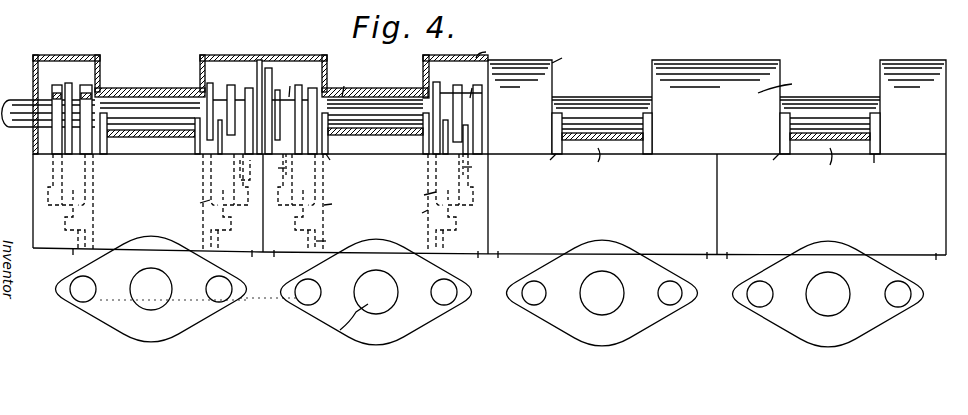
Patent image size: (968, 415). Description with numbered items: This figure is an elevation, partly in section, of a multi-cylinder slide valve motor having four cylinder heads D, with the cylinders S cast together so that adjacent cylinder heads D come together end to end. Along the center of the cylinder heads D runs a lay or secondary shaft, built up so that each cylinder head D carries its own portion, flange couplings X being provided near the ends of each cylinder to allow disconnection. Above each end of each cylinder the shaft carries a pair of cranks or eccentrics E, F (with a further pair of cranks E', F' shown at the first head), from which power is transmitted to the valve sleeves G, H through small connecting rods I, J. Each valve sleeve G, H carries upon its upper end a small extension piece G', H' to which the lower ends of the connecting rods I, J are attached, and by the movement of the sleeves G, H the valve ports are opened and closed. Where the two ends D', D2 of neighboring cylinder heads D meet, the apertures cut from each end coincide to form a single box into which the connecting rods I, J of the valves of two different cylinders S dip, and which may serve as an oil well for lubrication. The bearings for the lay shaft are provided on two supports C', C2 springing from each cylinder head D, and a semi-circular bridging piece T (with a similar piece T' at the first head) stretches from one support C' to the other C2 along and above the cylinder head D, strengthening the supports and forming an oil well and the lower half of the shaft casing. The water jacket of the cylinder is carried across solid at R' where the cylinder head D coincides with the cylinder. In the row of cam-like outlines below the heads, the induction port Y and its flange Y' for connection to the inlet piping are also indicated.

The solid portion of water jacket R' is at (489, 88).
The flange coupling X is at (263, 58).
The valve rod E' is at (58, 111).
The valve rod F' is at (83, 111).
The passage T' is at (261, 100).
The crank E is at (348, 96).
The crank F is at (312, 112).
The semi-circular bridging piece T is at (604, 140).
The valve connecting rod I is at (52, 160).
The bearing support C' is at (445, 146).
The bearing support C2 is at (532, 146).
The cylinder head D is at (489, 204).
The end of cylinder head D2 is at (390, 260).
The end of cylinder head D' is at (589, 261).
The extension piece G' is at (262, 202).
The outer valve sleeve G is at (268, 240).
The inner valve sleeve H is at (260, 202).
The extension piece H' is at (257, 190).
The valve connecting rod J is at (239, 176).
The cylinder S is at (490, 294).
The induction port Y is at (490, 309).
The induction flange Y' is at (895, 315).